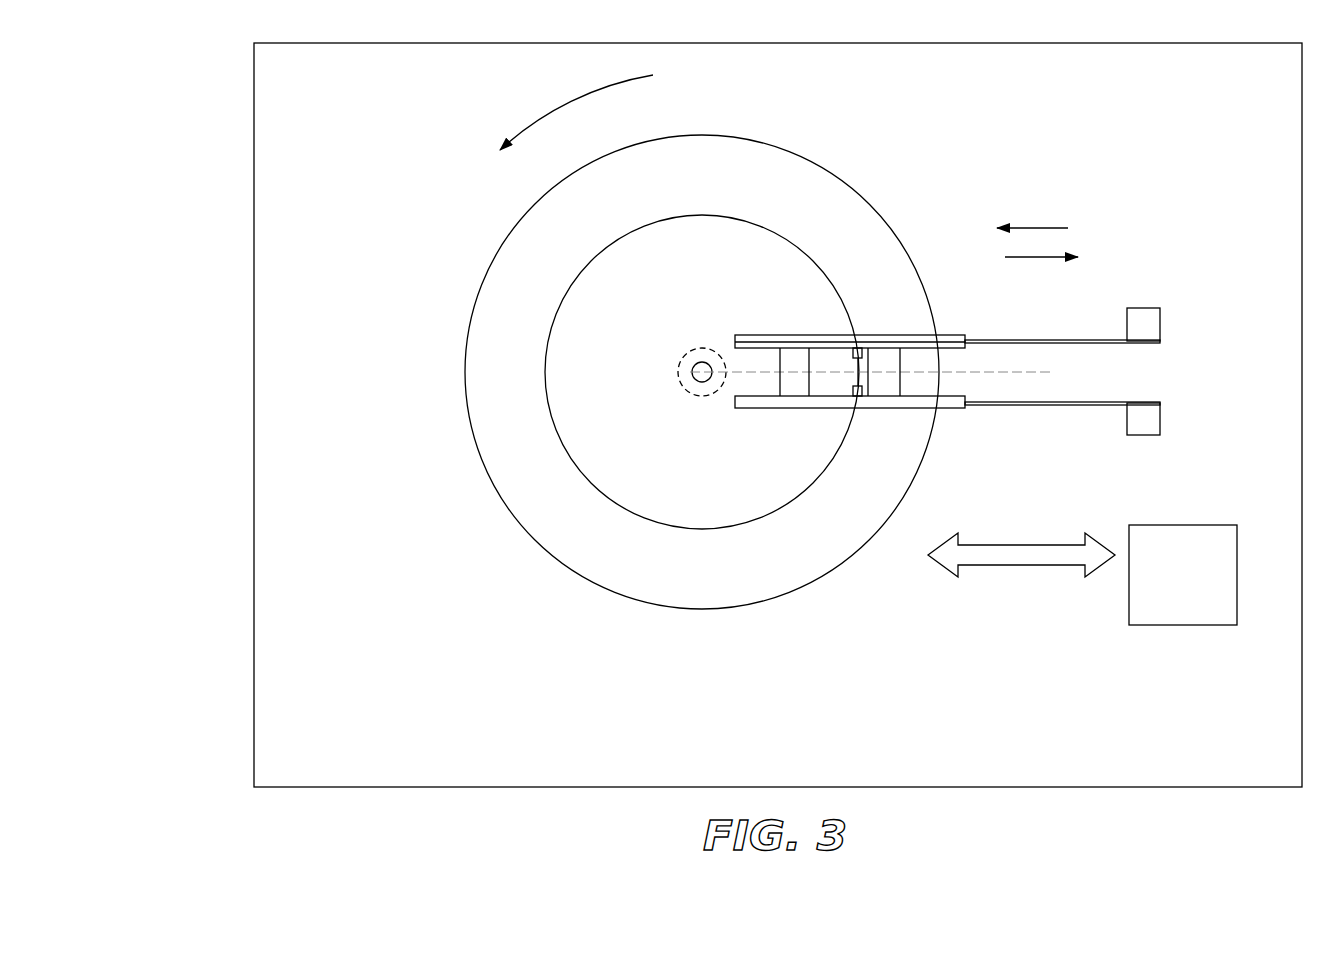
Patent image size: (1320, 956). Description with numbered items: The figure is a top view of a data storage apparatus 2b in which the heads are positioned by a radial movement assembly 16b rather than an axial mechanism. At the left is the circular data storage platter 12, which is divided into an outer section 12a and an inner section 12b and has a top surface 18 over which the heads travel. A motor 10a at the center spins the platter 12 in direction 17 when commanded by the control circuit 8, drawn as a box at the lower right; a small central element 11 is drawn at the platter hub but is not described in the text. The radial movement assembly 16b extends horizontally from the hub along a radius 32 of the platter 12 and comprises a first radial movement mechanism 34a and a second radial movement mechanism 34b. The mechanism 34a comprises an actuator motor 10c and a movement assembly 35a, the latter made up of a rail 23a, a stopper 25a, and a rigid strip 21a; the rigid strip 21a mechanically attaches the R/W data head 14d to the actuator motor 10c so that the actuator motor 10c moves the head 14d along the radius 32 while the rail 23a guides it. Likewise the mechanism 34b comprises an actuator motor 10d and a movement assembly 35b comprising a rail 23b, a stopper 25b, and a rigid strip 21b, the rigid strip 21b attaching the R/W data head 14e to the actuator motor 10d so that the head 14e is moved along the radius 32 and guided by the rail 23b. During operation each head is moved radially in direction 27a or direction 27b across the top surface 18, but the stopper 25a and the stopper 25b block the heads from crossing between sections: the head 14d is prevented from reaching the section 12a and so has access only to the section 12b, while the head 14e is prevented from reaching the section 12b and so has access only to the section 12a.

The data storage apparatus 2b is at (240, 138).
The direction 17 is at (543, 118).
The data storage platter 12 is at (845, 180).
The section of data storage platter 12a is at (683, 192).
The section of data storage platter 12b is at (683, 271).
The top surface 18 is at (500, 372).
The rotation axis 11 is at (682, 372).
The motor 10a is at (682, 360).
The radius 32 is at (990, 372).
The rail 23a is at (914, 337).
The rail 23b is at (920, 403).
The R/W data head 14d is at (797, 388).
The R/W data head 14e is at (891, 388).
The stopper 25a is at (857, 348).
The stopper 25b is at (858, 397).
The rigid strip 21a is at (1093, 340).
The rigid strip 21b is at (1093, 405).
The actuator motor 10c is at (1143, 308).
The actuator motor 10d is at (1143, 435).
The movement assembly 35a is at (968, 332).
The movement assembly 35b is at (968, 410).
The direction 27a is at (1045, 225).
The direction 27b is at (1033, 258).
The radial movement assembly 16b is at (945, 260).
The radial movement mechanism 34a is at (1157, 248).
The radial movement mechanism 34b is at (1147, 480).
The control circuit 8 is at (1174, 617).